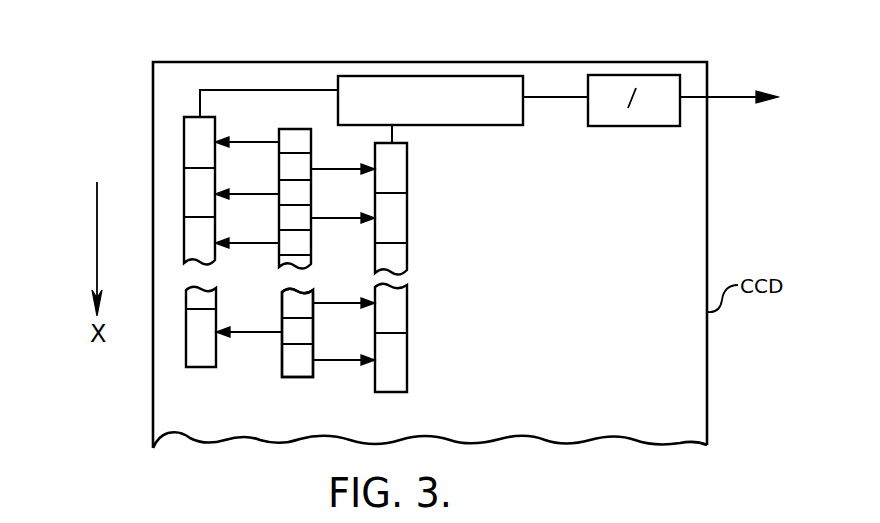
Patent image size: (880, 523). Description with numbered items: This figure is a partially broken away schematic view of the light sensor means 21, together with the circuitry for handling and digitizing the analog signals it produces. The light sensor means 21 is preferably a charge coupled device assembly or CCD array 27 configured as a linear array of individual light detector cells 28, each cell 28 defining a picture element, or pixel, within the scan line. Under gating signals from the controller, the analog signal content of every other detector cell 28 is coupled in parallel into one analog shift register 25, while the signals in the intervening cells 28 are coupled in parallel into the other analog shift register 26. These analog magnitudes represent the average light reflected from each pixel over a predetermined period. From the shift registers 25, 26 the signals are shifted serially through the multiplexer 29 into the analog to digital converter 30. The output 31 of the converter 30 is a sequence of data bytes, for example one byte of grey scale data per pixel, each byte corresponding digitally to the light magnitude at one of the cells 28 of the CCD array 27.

The light sensor means 21 is at (302, 54).
The analog shift register 25 is at (184, 156).
The analog shift register 26 is at (393, 401).
The CCD array 27 is at (302, 381).
The light detector cells 28 is at (302, 143).
The multiplexer 29 is at (500, 125).
The analog to digital converter 30 is at (645, 126).
The output 31 is at (733, 97).